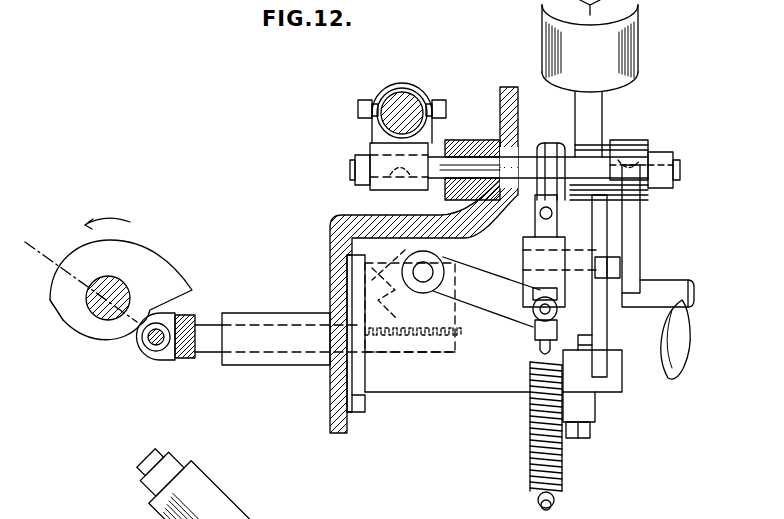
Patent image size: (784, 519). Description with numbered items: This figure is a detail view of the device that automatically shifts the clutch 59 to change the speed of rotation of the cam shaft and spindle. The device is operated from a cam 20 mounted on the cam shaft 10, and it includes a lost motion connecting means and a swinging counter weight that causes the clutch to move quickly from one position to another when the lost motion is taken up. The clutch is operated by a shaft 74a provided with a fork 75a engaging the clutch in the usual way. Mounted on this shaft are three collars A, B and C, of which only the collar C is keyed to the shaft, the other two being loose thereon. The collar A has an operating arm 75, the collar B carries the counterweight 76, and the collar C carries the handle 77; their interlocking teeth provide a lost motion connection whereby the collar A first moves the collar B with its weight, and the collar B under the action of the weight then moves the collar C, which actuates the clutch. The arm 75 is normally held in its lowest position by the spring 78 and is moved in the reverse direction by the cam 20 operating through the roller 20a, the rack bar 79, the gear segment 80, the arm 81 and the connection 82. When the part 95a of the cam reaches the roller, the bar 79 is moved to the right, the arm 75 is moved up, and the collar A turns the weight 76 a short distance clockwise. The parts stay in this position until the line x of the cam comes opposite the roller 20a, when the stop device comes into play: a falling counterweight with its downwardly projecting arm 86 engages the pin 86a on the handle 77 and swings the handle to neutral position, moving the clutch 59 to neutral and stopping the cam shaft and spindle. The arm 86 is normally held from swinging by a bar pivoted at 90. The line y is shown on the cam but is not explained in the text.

The counterweight 76 is at (543, 26).
The clutch 59 is at (386, 94).
The fork 75a is at (368, 138).
The shaft 74a is at (355, 170).
The operating arm 75 is at (497, 152).
The collar A is at (552, 145).
The collar C is at (636, 142).
The collar B is at (680, 170).
The handle 77 is at (630, 222).
The pin 86a is at (616, 267).
The downwardly projecting arm 86 is at (607, 332).
The connection 82 is at (523, 242).
The arm 81 is at (488, 306).
The gear segment 80 is at (338, 282).
The rack bar 79 is at (422, 344).
The spring 78 is at (530, 452).
The pivot 90 is at (590, 432).
The cam 20 is at (85, 264).
The cam shaft 10 is at (92, 293).
The part of cam 95a is at (66, 322).
The roller 20a is at (152, 360).
The line of cam x is at (70, 282).
The axis line y is at (203, 281).